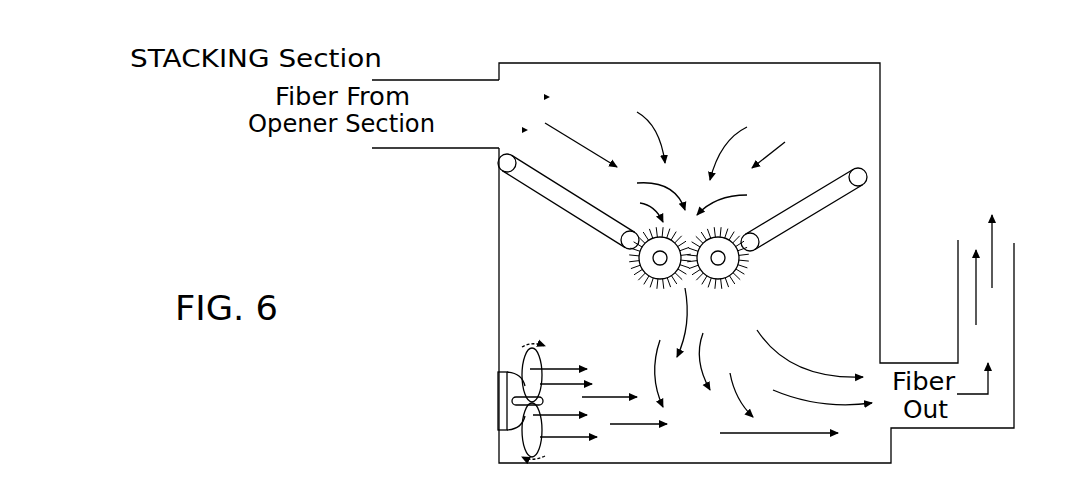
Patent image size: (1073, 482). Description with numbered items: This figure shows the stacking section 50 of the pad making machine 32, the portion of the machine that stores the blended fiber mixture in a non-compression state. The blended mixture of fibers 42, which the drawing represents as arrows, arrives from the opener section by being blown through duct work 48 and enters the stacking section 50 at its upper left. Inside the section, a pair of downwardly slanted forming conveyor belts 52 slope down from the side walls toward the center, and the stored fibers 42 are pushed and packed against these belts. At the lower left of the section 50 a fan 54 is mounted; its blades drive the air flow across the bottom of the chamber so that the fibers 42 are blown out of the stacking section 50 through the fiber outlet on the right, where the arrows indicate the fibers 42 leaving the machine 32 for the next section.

The pad making machine 32 is at (835, 38).
The stacking section 50 is at (695, 97).
The fibers 42 is at (577, 138).
The forming conveyor belts 52 is at (575, 203).
The duct work 48 is at (427, 148).
The fan 54 is at (532, 427).